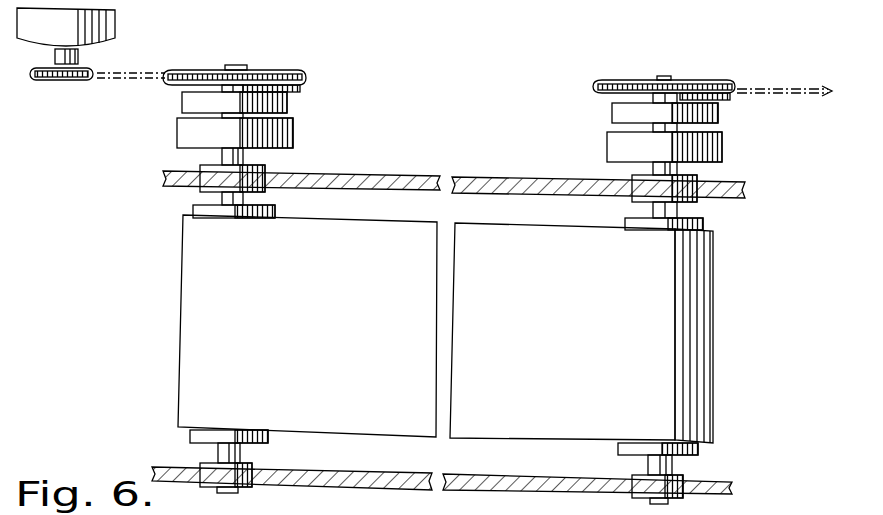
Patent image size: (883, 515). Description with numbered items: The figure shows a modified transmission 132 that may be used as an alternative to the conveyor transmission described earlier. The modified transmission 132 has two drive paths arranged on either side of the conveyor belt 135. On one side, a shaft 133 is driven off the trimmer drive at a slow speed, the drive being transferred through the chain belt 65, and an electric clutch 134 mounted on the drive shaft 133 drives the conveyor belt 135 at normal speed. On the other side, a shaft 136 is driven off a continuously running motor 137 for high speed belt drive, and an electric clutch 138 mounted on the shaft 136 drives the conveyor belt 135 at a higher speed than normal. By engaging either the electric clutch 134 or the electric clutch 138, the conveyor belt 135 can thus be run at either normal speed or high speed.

The modified transmission 132 is at (478, 158).
The shaft 133 is at (672, 78).
The electric clutch 134 is at (722, 148).
The conveyor belt 135 is at (708, 262).
The shaft 136 is at (245, 68).
The motor 137 is at (117, 24).
The electric clutch 138 is at (293, 128).
The chain belt 65 is at (810, 72).